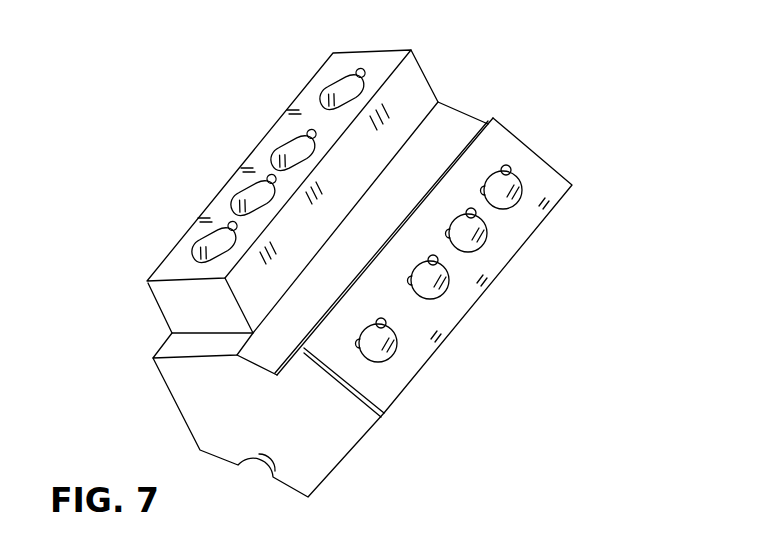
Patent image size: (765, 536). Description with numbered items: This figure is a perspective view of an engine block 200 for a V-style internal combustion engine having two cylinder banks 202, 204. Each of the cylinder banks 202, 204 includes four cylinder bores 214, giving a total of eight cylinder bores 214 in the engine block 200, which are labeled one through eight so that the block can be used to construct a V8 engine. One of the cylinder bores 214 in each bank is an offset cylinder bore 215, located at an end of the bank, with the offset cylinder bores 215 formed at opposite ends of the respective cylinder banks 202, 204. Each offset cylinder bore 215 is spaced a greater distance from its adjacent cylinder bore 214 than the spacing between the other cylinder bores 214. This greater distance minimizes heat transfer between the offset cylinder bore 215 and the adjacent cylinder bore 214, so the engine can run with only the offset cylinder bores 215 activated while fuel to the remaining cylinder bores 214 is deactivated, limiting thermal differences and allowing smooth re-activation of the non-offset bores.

The engine block 200 is at (514, 104).
The cylinder bank 202 is at (268, 142).
The cylinder bank 204 is at (467, 300).
The cylinder bore 214 is at (230, 204).
The offset cylinder bore 215 is at (315, 80).